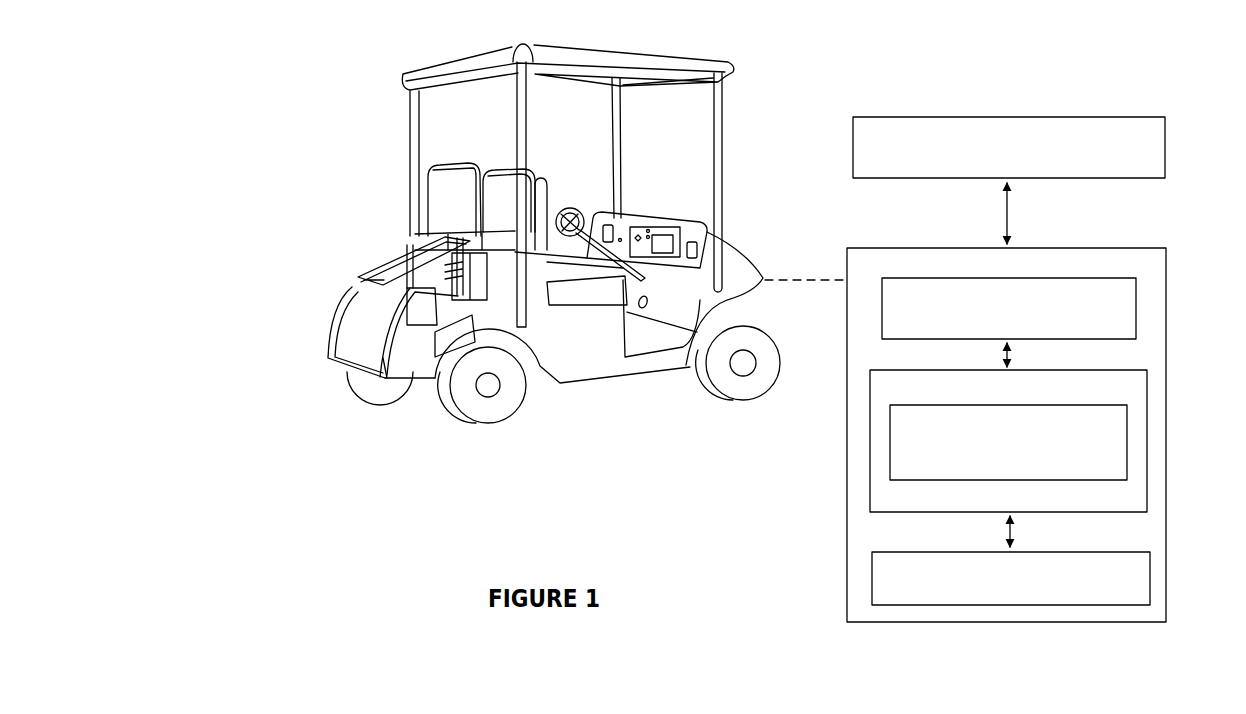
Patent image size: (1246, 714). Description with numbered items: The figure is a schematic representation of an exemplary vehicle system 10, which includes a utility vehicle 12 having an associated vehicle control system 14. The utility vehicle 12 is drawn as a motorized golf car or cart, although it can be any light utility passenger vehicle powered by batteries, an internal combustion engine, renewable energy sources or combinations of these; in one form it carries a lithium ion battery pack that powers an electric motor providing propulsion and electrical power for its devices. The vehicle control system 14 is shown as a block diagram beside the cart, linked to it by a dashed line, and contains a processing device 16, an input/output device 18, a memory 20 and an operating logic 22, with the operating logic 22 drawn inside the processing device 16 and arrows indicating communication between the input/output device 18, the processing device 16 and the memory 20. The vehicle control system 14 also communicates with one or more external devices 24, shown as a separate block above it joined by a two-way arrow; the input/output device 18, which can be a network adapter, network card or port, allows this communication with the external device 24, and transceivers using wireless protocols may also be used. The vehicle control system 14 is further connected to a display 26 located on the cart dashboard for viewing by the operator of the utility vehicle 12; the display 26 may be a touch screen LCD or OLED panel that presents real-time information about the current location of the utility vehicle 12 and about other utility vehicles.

The vehicle system 10 is at (492, 504).
The utility vehicle 12 is at (760, 110).
The vehicle control system 14 is at (1167, 273).
The processing device 16 is at (870, 432).
The input/output device 18 is at (1136, 313).
The memory 20 is at (1150, 581).
The operating logic 22 is at (1113, 457).
The external device 24 is at (1165, 153).
The display 26 is at (660, 237).